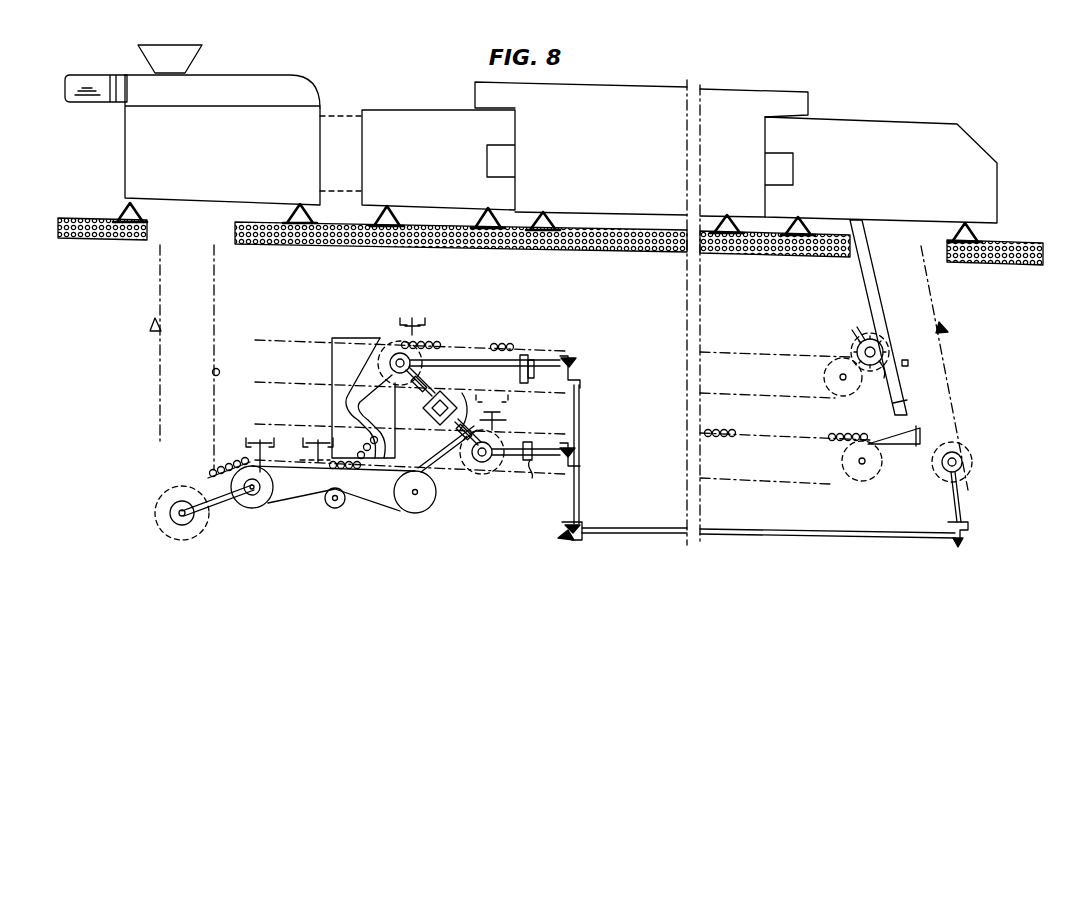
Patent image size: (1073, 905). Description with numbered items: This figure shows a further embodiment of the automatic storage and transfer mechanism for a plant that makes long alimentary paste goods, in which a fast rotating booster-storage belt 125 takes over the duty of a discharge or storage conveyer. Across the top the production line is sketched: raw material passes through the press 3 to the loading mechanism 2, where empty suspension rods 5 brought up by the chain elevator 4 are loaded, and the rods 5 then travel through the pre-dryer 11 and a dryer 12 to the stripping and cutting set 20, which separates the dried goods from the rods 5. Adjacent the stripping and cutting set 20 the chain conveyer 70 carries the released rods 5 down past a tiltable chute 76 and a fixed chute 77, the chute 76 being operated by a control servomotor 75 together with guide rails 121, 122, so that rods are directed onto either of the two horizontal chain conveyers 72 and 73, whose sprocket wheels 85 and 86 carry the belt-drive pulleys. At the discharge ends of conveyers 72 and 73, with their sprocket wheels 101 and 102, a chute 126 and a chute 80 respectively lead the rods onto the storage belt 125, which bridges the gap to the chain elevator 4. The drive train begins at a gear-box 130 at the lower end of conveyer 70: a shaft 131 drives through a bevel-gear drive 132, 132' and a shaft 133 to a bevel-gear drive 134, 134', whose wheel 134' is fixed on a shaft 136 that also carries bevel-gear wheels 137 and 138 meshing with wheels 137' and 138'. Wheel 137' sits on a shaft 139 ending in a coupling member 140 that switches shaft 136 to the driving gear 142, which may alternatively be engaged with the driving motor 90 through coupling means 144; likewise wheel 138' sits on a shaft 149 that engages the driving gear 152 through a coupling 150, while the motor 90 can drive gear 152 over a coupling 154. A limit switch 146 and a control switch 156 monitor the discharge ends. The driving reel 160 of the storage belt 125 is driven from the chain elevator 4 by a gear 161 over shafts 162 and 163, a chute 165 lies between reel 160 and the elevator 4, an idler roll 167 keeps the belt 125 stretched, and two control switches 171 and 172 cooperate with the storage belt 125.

The loading mechanism 2 is at (200, 169).
The press 3 is at (250, 82).
The chain elevator 4 is at (216, 296).
The suspension rods 5 is at (218, 370).
The pre-dryer 11 is at (410, 179).
The dryer 12 is at (588, 182).
The stripping and cutting set 20 is at (860, 189).
The chain conveyer 70 is at (952, 382).
The upper chain conveyer 72 is at (722, 353).
The lower chain conveyer 73 is at (745, 480).
The servo-motor 75 is at (872, 366).
The tiltable feed chute 76 is at (868, 337).
The fixed chute 77 is at (892, 445).
The chute 80 is at (436, 460).
The sprocket wheel 85 is at (866, 481).
The sprocket wheel 86 is at (844, 396).
The driving motor 90 is at (432, 411).
The sprocket wheel 101 is at (415, 363).
The sprocket wheel 102 is at (490, 465).
The guide rail 121 is at (864, 292).
The guide rail 122 is at (899, 402).
The storage belt 125 is at (405, 511).
The chute 126 is at (358, 338).
The gear-box 130 is at (962, 462).
The rotatable shaft 131 is at (960, 497).
The bevel-gear wheel 132 is at (987, 530).
The bevel-gear wheel 132' is at (961, 562).
The shaft 133 is at (926, 538).
The bevel-gear wheel 134 is at (583, 545).
The bevel-gear wheel 134' is at (547, 549).
The shaft 136 is at (578, 497).
The bevel-gear wheel 137 is at (590, 458).
The bevel-gear wheel 137' is at (592, 448).
The bevel-gear wheel 138 is at (590, 374).
The bevel-gear wheel 138' is at (592, 368).
The shaft 139 is at (548, 464).
The coupling member 140 is at (524, 462).
The driving gear 142 is at (470, 462).
The coupling means 144 is at (424, 392).
The limit switch 146 is at (500, 420).
The shaft 149 is at (530, 356).
The coupling 150 is at (532, 385).
The driving gear 152 is at (395, 352).
The coupling 154 is at (370, 398).
The control switch 156 is at (418, 326).
The driving reel 160 is at (282, 504).
The gear 161 is at (183, 526).
The shaft 162 is at (226, 500).
The shaft 163 is at (252, 506).
The chute 165 is at (212, 476).
The idler roll 167 is at (336, 508).
The control switch 171 is at (260, 442).
The control switch 172 is at (316, 442).